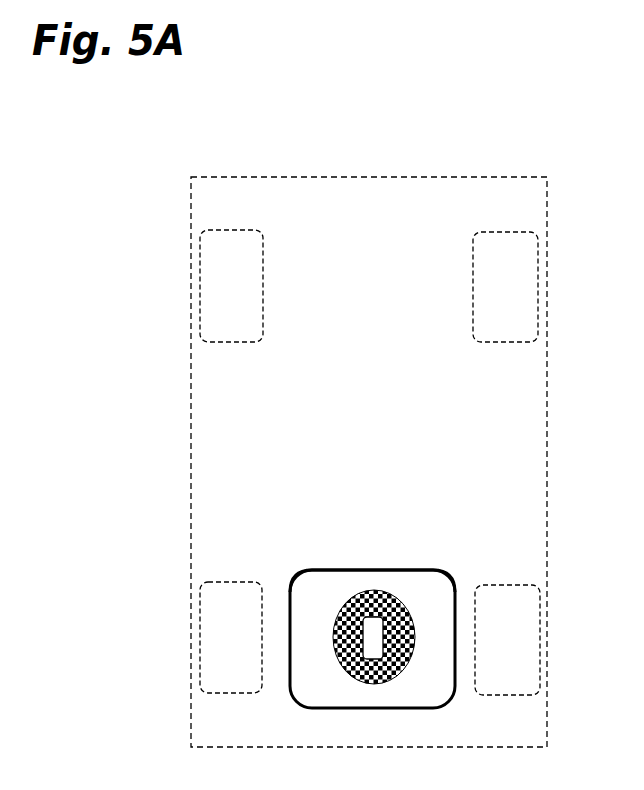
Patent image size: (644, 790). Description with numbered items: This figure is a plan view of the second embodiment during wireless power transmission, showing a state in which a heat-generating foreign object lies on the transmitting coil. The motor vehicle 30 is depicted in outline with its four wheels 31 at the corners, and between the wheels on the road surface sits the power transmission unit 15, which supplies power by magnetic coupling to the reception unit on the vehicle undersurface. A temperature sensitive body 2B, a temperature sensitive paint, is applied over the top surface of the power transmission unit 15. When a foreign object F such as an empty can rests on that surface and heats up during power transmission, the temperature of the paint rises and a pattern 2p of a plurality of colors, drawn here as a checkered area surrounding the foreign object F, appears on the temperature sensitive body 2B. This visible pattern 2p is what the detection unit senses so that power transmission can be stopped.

The motor vehicle 30 is at (549, 200).
The wheels 31 is at (263, 275).
The temperature sensitive body 2B is at (428, 583).
The power transmission unit 15 is at (367, 570).
The pattern 2p is at (408, 634).
The foreign object F is at (366, 634).